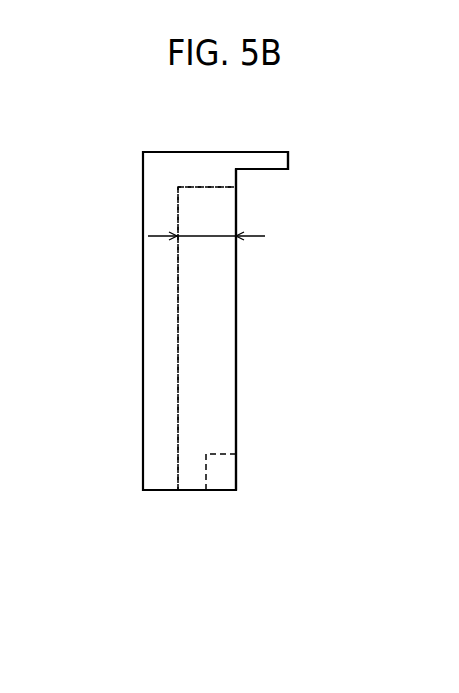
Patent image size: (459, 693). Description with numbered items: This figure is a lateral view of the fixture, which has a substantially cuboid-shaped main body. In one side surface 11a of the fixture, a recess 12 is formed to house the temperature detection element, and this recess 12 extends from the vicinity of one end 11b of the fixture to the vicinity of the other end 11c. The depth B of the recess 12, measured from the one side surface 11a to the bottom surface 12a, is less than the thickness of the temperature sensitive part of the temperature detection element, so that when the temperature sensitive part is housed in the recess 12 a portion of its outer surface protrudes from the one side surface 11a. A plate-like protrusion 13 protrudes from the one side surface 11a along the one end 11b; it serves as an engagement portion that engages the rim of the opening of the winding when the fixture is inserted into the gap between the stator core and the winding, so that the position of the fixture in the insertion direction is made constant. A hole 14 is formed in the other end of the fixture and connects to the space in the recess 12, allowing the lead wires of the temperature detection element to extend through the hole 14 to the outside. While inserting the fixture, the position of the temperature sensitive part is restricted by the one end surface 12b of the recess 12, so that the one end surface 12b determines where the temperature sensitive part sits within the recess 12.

The one side surface 11a is at (236, 425).
The one end 11b is at (198, 152).
The other end 11c is at (223, 490).
The recess 12 is at (210, 317).
The bottom surface 12a is at (178, 367).
The one end surface 12b is at (218, 187).
The plate-like protrusion 13 is at (272, 158).
The hole 14 is at (192, 479).
The depth of the recess B is at (215, 239).